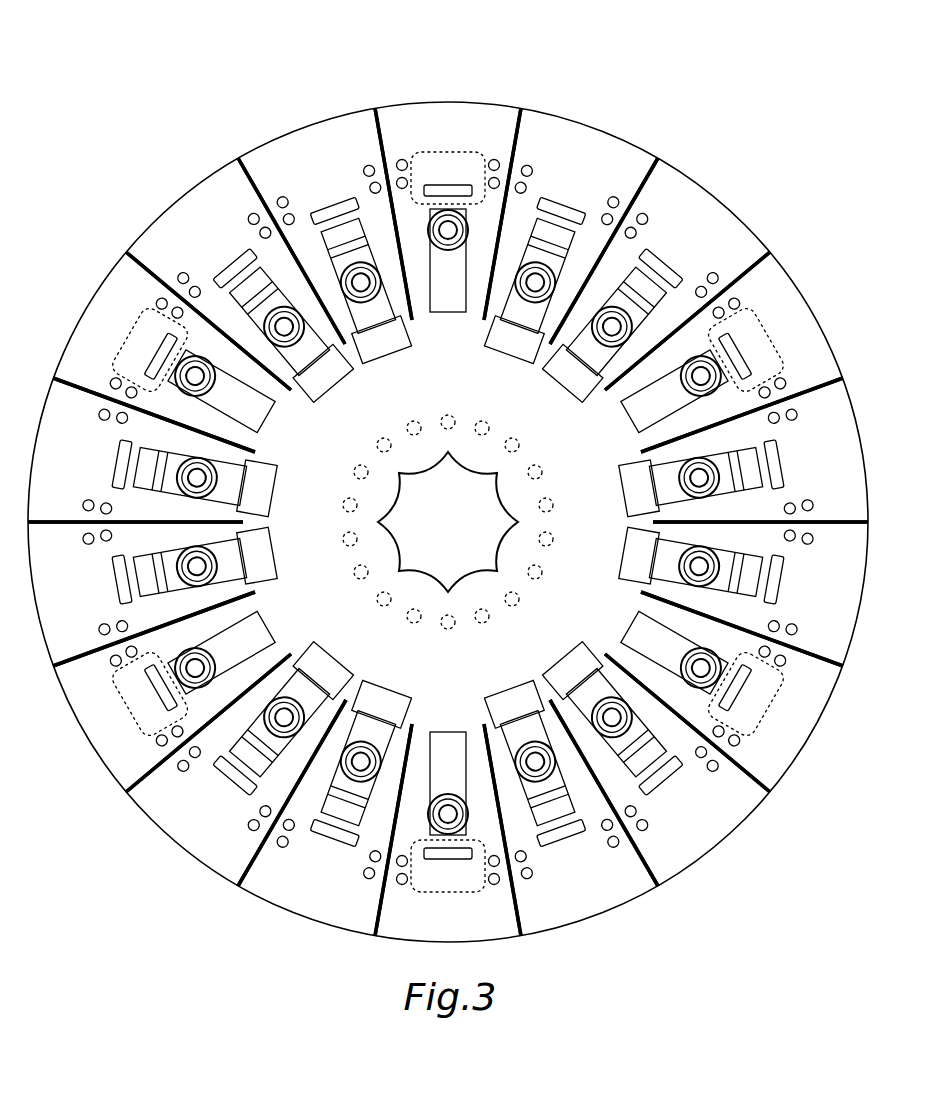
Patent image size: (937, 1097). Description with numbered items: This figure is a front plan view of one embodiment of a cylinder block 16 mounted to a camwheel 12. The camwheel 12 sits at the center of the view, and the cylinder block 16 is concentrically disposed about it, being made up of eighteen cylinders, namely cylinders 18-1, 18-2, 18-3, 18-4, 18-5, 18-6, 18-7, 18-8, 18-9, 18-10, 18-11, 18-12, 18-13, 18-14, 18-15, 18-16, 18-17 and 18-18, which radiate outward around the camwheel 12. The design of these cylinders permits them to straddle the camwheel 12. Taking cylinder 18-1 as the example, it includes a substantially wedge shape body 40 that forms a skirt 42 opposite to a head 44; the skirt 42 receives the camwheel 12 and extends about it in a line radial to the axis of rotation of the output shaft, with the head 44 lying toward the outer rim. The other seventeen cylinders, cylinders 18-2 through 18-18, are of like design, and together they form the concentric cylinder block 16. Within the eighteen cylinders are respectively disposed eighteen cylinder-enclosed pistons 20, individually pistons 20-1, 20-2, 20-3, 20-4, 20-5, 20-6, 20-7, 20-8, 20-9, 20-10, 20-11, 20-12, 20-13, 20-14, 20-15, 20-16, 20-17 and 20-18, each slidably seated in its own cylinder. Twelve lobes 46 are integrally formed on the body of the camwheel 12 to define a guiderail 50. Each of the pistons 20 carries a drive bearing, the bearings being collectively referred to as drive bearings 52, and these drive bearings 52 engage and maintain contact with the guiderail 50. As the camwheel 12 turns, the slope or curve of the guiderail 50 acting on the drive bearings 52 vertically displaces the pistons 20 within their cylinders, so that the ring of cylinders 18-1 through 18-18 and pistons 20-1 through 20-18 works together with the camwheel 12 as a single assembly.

The camwheel 12 is at (480, 472).
The cylinder block 16 is at (680, 172).
The cylinder-enclosed pistons 20 is at (524, 232).
The wedge shape body 40 is at (383, 128).
The skirt 42 is at (400, 242).
The head 44 is at (453, 101).
The lobes 46 is at (612, 203).
The guiderail 50 is at (160, 742).
The drive bearings 52 is at (703, 292).
The cylinder 18-1 is at (424, 139).
The cylinder 18-2 is at (559, 159).
The cylinder 18-3 is at (676, 228).
The cylinder 18-4 is at (766, 335).
The cylinder 18-5 is at (811, 463).
The cylinder 18-6 is at (811, 601).
The cylinder 18-7 is at (766, 731).
The cylinder 18-8 is at (678, 837).
The cylinder 18-9 is at (559, 903).
The cylinder 18-10 is at (420, 932).
The cylinder 18-11 is at (283, 903).
The cylinder 18-12 is at (165, 828).
The cylinder 18-13 is at (77, 726).
The cylinder 18-14 is at (41, 604).
The cylinder 18-15 is at (40, 467).
The cylinder 18-16 is at (77, 343).
The cylinder 18-17 is at (167, 234).
The cylinder 18-18 is at (283, 161).
The piston 20-1 is at (448, 307).
The piston 20-2 is at (515, 338).
The piston 20-3 is at (574, 372).
The piston 20-4 is at (634, 414).
The piston 20-5 is at (641, 488).
The piston 20-6 is at (641, 556).
The piston 20-7 is at (634, 630).
The piston 20-8 is at (574, 672).
The piston 20-9 is at (515, 706).
The piston 20-10 is at (448, 737).
The piston 20-11 is at (381, 706).
The piston 20-12 is at (322, 672).
The piston 20-13 is at (262, 630).
The piston 20-14 is at (255, 556).
The piston 20-15 is at (255, 488).
The piston 20-16 is at (262, 414).
The piston 20-17 is at (322, 372).
The piston 20-18 is at (381, 338).